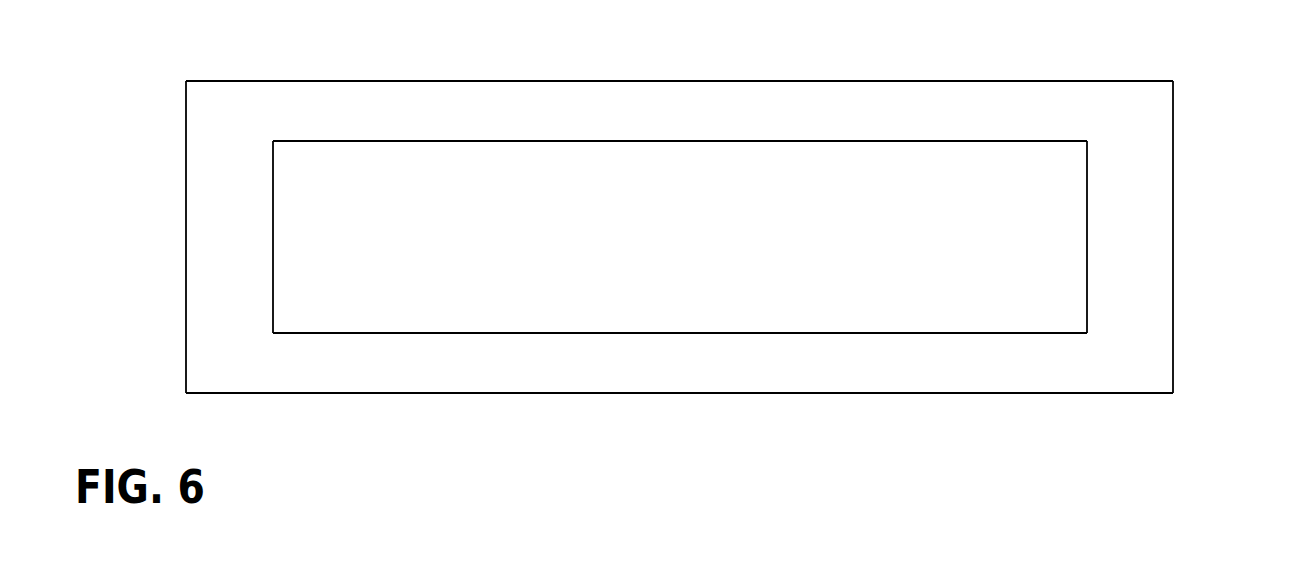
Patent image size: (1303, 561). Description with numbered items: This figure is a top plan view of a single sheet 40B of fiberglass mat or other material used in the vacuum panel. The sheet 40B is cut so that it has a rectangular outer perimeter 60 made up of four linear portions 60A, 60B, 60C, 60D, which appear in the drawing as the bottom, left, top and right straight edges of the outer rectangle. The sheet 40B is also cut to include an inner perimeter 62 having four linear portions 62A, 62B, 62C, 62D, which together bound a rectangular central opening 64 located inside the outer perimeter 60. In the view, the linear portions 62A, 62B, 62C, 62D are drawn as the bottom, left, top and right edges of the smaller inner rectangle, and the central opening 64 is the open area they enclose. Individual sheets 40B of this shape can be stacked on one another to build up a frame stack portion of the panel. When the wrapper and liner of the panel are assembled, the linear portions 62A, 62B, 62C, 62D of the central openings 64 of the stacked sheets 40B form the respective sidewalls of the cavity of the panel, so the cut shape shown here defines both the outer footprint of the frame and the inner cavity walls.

The rectangular outer perimeter 60 is at (681, 246).
The linear portion of outer perimeter 60A is at (611, 393).
The linear portion of outer perimeter 60B is at (186, 196).
The linear portion of outer perimeter 60C is at (615, 81).
The linear portion of outer perimeter 60D is at (1173, 233).
The inner perimeter 62 is at (680, 237).
The linear portion of inner perimeter 62A is at (709, 333).
The linear portion of inner perimeter 62B is at (273, 248).
The linear portion of inner perimeter 62C is at (683, 142).
The linear portion of inner perimeter 62D is at (1087, 253).
The rectangular central opening 64 is at (667, 254).
The sheet of fiberglass mat 40B is at (1175, 149).